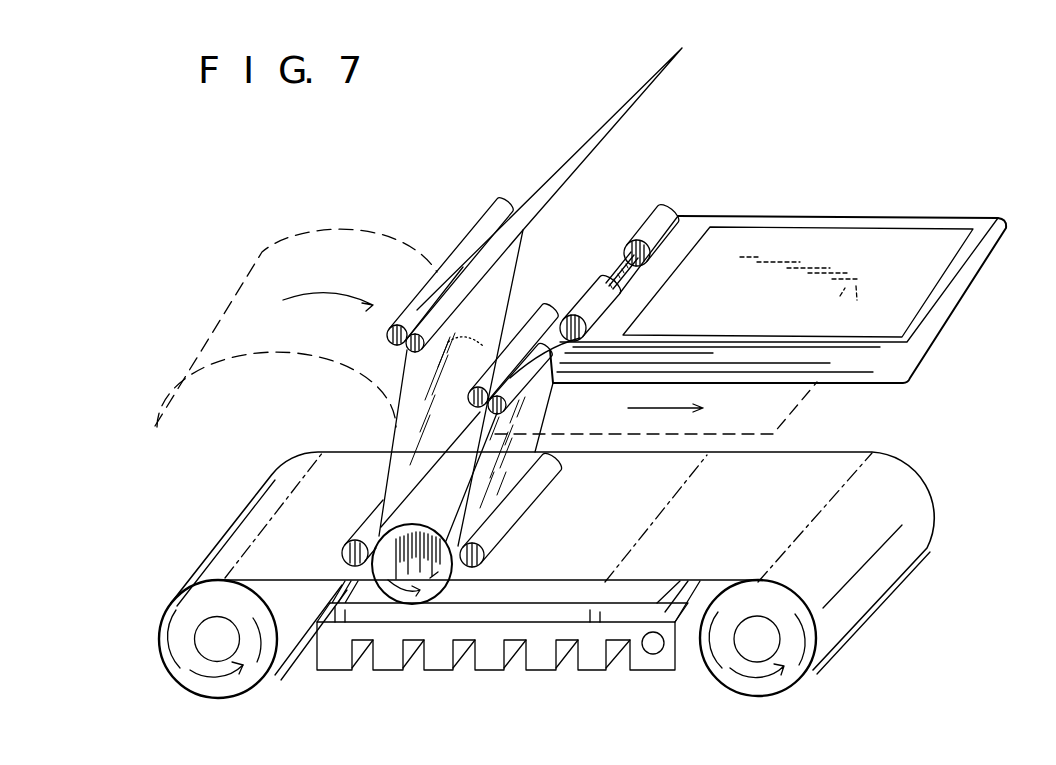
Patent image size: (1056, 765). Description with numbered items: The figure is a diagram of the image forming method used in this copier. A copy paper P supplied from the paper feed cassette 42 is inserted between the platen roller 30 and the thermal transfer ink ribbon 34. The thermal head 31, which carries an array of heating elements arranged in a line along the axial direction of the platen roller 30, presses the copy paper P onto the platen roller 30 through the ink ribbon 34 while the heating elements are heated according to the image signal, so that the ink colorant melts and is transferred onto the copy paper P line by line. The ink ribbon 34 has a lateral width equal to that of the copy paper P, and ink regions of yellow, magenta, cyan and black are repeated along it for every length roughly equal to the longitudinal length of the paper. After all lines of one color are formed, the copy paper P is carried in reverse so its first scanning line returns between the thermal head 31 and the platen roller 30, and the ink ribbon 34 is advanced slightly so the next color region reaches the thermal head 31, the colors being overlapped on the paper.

The platen roller 30 is at (413, 592).
The thermal head 31 is at (337, 655).
The thermal transfer ink ribbon 34 is at (921, 496).
The paper feed cassette 42 is at (963, 287).
The copy paper P is at (567, 160).